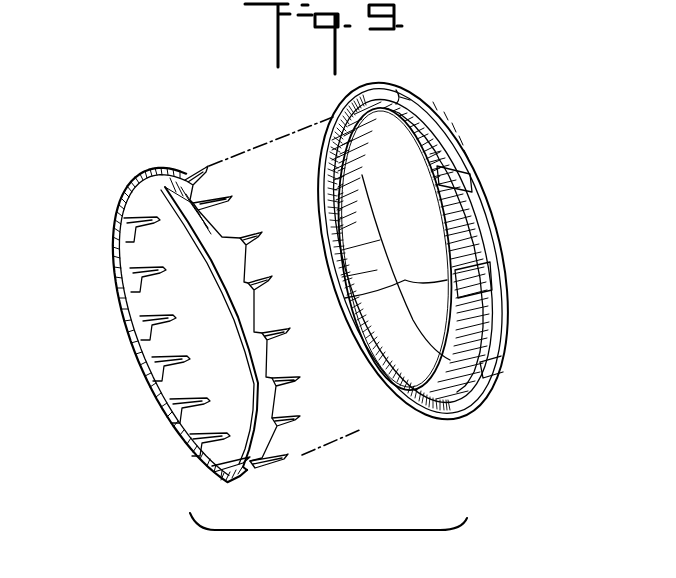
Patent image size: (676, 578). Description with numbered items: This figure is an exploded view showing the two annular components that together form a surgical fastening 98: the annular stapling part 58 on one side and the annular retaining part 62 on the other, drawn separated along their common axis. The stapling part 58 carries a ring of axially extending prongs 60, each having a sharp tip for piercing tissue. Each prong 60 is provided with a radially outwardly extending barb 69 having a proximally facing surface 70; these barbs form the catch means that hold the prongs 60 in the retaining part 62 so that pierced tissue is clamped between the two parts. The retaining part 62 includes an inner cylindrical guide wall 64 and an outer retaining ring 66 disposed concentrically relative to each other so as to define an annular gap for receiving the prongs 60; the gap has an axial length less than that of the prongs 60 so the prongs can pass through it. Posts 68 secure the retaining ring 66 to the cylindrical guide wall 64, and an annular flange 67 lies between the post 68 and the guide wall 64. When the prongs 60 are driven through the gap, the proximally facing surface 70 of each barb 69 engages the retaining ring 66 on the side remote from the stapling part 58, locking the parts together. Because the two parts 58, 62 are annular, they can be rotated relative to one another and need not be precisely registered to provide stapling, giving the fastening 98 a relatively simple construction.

The stapling part 58 is at (207, 299).
The prong 60 is at (236, 197).
The retaining part 62 is at (434, 249).
The inner cylindrical guide wall 64 is at (410, 282).
The outer retaining ring 66 is at (398, 92).
The annular flange 67 is at (457, 151).
The post 68 is at (405, 97).
The barb 69 is at (263, 236).
The proximally facing surface 70 is at (187, 176).
The surgical fastening 98 is at (285, 123).